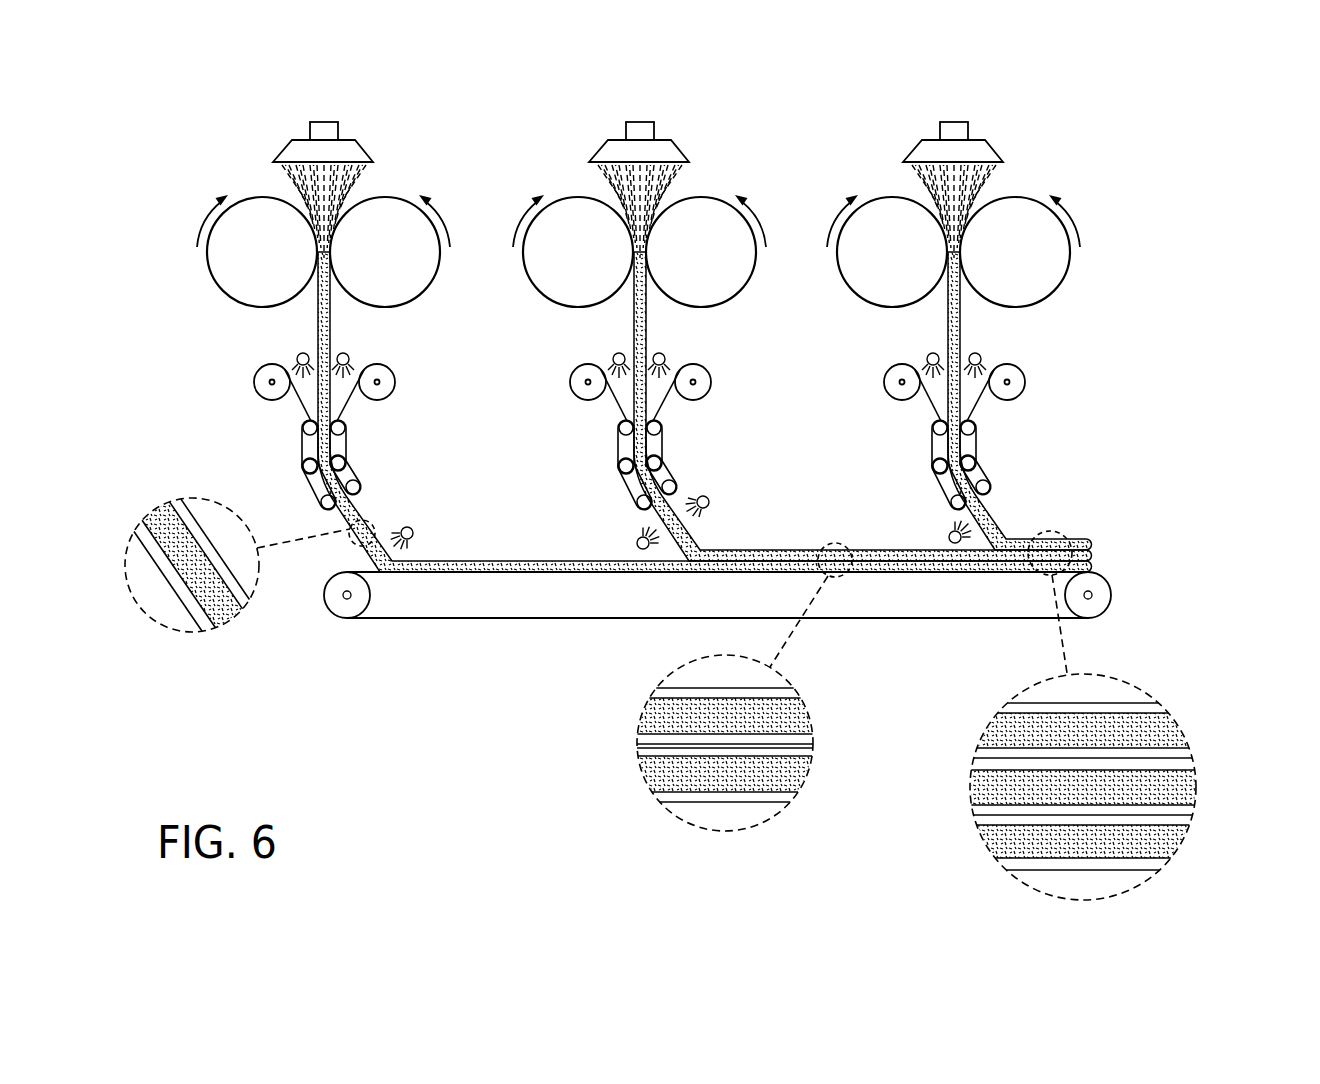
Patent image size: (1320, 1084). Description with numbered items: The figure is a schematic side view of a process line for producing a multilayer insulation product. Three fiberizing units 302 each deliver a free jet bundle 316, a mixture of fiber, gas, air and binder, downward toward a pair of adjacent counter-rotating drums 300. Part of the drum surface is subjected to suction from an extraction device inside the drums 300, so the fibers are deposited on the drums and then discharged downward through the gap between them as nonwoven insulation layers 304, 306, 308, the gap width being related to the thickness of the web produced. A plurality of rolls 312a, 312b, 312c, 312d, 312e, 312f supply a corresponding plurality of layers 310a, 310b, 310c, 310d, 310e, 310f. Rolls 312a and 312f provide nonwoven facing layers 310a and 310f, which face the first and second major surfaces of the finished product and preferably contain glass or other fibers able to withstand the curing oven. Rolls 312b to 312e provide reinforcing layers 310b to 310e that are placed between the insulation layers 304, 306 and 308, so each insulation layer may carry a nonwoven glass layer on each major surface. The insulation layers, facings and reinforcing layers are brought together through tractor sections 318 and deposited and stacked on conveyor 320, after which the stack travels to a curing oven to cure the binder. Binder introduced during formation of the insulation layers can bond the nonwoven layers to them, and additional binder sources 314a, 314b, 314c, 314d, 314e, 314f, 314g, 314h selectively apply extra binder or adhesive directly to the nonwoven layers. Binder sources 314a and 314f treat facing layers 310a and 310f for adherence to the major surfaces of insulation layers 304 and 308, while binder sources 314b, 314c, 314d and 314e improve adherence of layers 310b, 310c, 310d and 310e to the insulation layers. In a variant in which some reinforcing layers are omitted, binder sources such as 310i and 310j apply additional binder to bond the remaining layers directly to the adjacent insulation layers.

The counter-rotating drums 300 is at (393, 197).
The fiberizing unit 302 is at (323, 120).
The insulation layer 304 is at (333, 306).
The insulation layer 306 is at (648, 306).
The insulation layer 308 is at (962, 306).
The nonwoven facing layer 310a is at (300, 398).
The reinforcing layer 310b is at (350, 398).
The reinforcing layer 310c is at (615, 398).
The reinforcing layer 310d is at (666, 398).
The reinforcing layer 310e is at (918, 400).
The nonwoven facing layer 310f is at (990, 398).
The binder source 310i is at (409, 526).
The spray applicator 310j is at (948, 537).
The roll 312a is at (259, 370).
The roll 312b is at (396, 382).
The roll 312c is at (575, 370).
The roll 312d is at (712, 382).
The roll 312e is at (889, 370).
The roll 312f is at (1026, 382).
The binder source 314a is at (300, 352).
The binder source 314b is at (350, 358).
The binder source 314c is at (616, 352).
The binder source 314d is at (666, 359).
The binder source 314e is at (930, 352).
The binder source 314f is at (982, 359).
The binder source 314g is at (636, 541).
The binder source 314h is at (710, 502).
The free jet bundle 316 is at (282, 182).
The tractor section 318 is at (302, 455).
The conveyor 320 is at (512, 618).